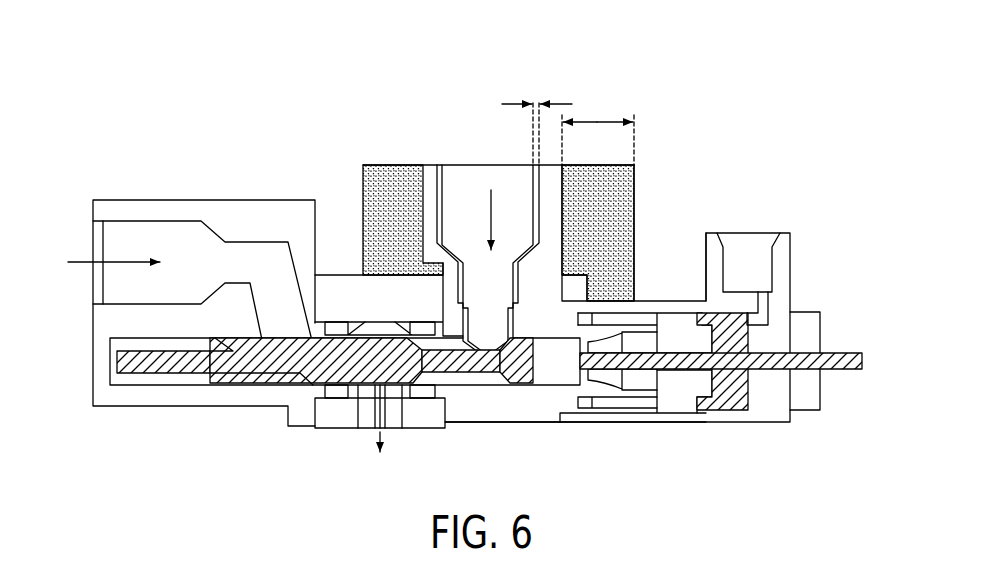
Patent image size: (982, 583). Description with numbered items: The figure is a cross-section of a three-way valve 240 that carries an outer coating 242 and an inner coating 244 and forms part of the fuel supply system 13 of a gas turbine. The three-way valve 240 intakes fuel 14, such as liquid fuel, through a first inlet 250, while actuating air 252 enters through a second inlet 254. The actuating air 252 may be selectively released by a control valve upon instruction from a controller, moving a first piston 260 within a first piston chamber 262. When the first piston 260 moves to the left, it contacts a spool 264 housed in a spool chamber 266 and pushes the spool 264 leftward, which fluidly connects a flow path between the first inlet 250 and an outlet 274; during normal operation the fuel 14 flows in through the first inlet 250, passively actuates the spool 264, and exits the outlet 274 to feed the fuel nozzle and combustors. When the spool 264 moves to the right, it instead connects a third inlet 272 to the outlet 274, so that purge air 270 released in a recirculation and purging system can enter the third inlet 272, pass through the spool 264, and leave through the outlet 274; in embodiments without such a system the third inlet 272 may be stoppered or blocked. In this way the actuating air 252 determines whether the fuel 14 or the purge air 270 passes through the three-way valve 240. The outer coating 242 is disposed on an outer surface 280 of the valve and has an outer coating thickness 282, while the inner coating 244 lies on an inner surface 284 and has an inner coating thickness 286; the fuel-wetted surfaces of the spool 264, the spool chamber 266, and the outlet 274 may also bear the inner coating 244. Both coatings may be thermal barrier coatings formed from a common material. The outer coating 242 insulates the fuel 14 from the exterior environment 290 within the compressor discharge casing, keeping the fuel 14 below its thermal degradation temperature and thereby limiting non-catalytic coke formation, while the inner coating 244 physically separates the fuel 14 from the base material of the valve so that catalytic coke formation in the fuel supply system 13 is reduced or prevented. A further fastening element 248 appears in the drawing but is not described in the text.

The fuel supply system 13 is at (746, 42).
The fuel 14 is at (492, 220).
The three-way valve 240 is at (688, 101).
The outer coating 242 is at (410, 161).
The inner coating 244 is at (443, 161).
The fastener 248 is at (383, 433).
The first inlet 250 is at (354, 177).
The actuating air 252 is at (744, 270).
The second inlet 254 is at (804, 256).
The first piston 260 is at (846, 380).
The first piston chamber 262 is at (683, 423).
The spool 264 is at (493, 380).
The spool chamber 266 is at (553, 386).
The purge air 270 is at (120, 264).
The third inlet 272 is at (79, 236).
The outlet 274 is at (334, 442).
The outer surface 280 is at (635, 232).
The outer coating thickness 282 is at (597, 118).
The inner surface 284 is at (533, 185).
The inner coating thickness 286 is at (513, 103).
The exterior environment 290 is at (828, 157).